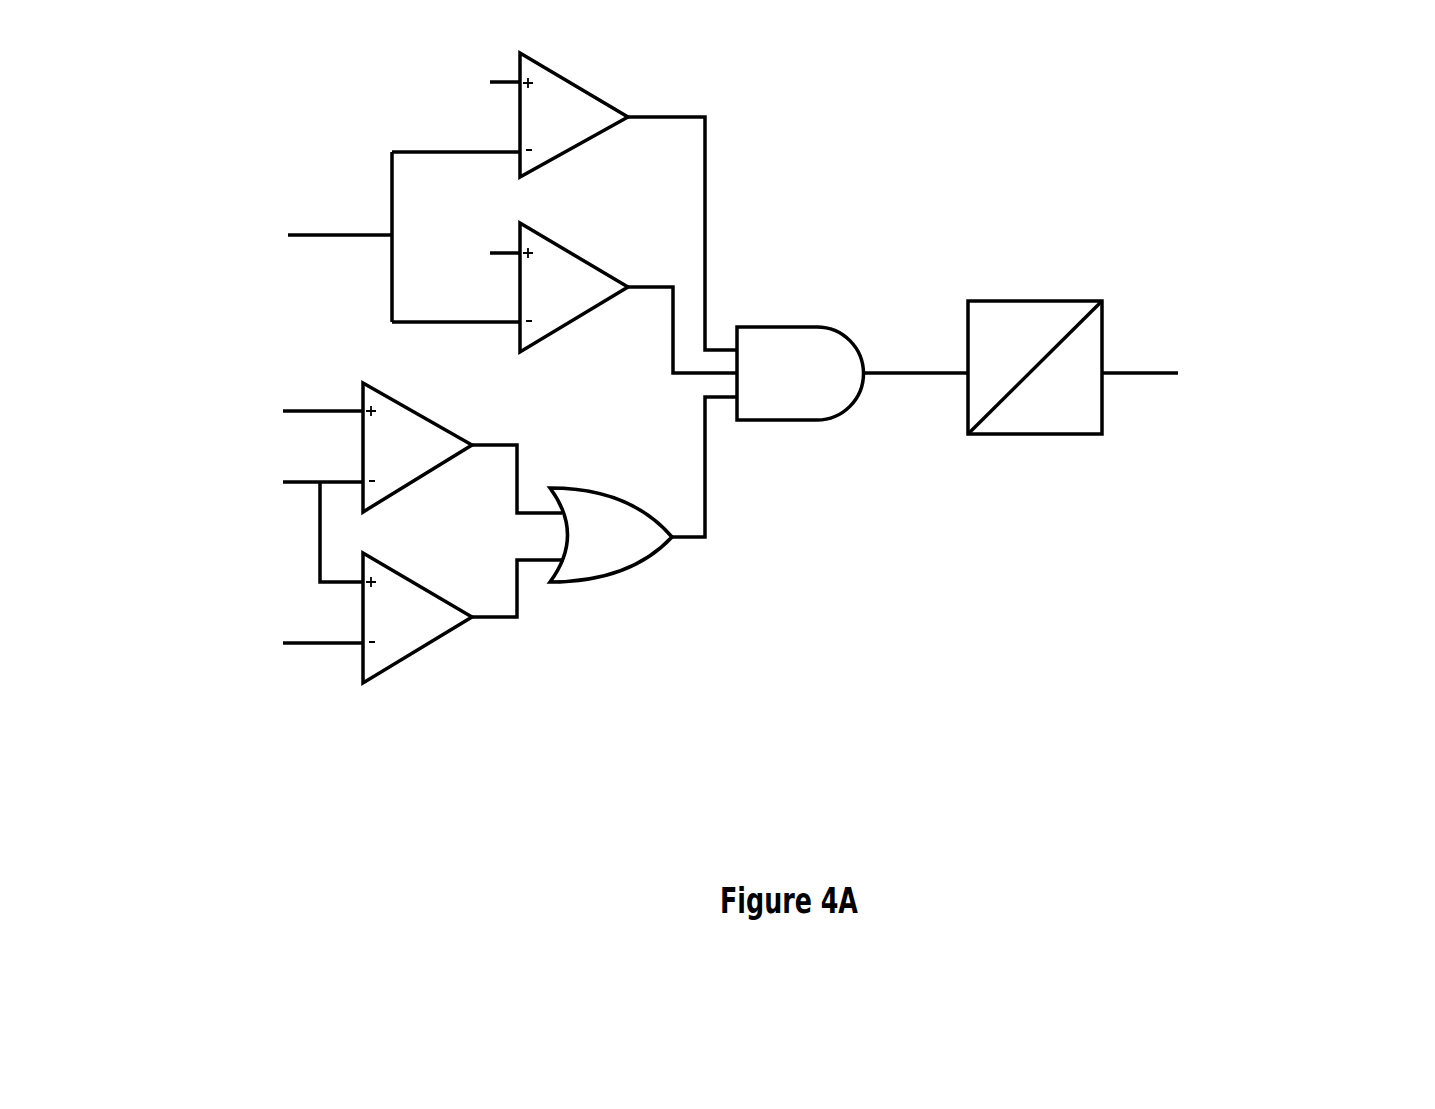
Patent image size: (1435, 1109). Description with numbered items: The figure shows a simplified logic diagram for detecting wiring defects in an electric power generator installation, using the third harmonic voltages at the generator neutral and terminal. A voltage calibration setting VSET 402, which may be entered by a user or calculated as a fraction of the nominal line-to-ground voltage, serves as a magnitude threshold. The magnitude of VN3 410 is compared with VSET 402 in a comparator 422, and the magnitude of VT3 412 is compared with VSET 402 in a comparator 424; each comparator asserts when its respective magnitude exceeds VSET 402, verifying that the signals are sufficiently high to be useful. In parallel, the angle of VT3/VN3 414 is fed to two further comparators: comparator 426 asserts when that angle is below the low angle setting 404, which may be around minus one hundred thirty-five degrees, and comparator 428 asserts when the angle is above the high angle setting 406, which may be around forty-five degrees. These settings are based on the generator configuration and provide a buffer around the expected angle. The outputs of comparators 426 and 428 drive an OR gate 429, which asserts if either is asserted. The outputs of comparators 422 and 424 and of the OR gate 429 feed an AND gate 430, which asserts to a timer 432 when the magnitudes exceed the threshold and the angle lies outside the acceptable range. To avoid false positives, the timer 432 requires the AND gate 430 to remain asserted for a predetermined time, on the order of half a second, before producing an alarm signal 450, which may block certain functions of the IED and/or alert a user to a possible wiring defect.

The voltage calibration setting VSET 402 is at (320, 233).
The low angle setting 404 is at (332, 409).
The high angle setting 406 is at (320, 647).
The magnitude of VN3 410 is at (500, 76).
The magnitude of VT3 412 is at (503, 248).
The angle of VT3/VN3 414 is at (343, 480).
The comparator 422 is at (548, 68).
The comparator 424 is at (550, 240).
The comparator 426 is at (404, 405).
The comparator 428 is at (404, 575).
The OR gate 429 is at (612, 488).
The AND gate 430 is at (776, 325).
The timer 432 is at (1010, 300).
The alarm signal 450 is at (1140, 372).